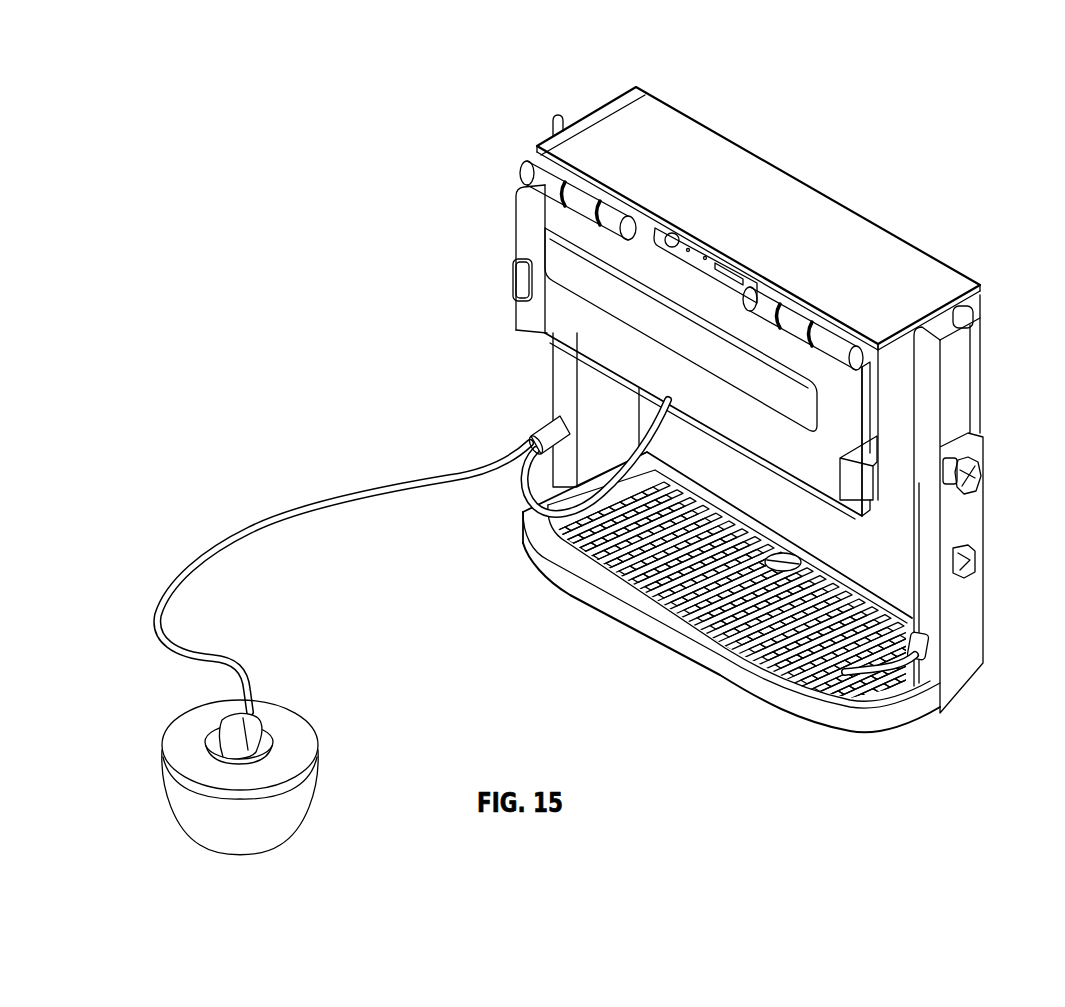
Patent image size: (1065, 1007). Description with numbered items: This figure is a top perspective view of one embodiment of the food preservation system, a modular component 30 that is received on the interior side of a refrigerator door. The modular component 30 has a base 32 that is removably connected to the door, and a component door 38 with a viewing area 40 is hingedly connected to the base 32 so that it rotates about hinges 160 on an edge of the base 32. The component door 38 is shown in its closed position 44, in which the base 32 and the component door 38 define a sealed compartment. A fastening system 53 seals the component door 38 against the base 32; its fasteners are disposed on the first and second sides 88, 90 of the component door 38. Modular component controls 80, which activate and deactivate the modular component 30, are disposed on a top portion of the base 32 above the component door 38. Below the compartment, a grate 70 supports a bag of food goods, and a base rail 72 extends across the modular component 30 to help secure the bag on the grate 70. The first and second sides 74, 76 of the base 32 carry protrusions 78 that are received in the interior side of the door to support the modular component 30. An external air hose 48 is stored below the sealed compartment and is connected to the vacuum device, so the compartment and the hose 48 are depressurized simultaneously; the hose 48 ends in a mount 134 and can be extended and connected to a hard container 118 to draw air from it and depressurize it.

The modular component 30 is at (442, 128).
The base 32 is at (752, 484).
The component door 38 is at (547, 313).
The viewing area 40 is at (682, 334).
The closed position 44 is at (1002, 346).
The air hose 48 is at (252, 680).
The fastening system 53 is at (514, 280).
The grate 70 is at (745, 640).
The base rail 72 is at (523, 476).
The first side 74 is at (550, 390).
The second side 76 is at (975, 517).
The protrusions 78 is at (983, 472).
The modular component controls 80 is at (665, 234).
The first side 88 is at (516, 243).
The second side 90 is at (857, 416).
The hard container 118 is at (305, 794).
The mount 134 is at (228, 741).
The hinges 160 is at (522, 166).